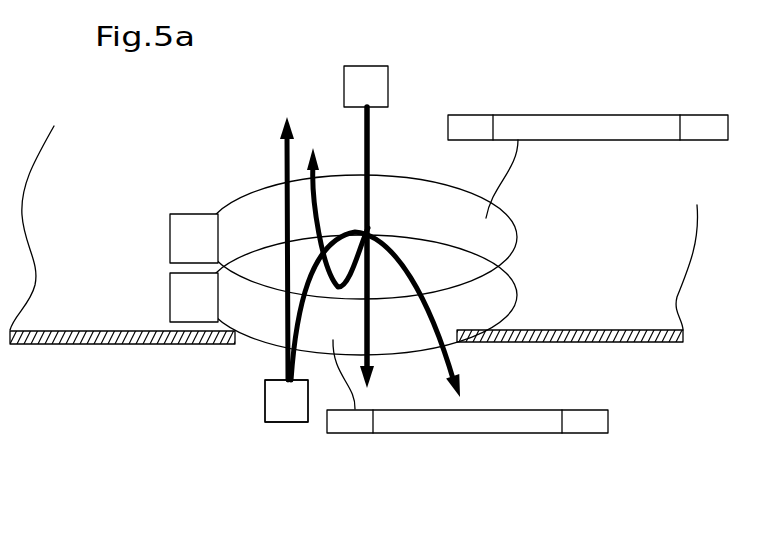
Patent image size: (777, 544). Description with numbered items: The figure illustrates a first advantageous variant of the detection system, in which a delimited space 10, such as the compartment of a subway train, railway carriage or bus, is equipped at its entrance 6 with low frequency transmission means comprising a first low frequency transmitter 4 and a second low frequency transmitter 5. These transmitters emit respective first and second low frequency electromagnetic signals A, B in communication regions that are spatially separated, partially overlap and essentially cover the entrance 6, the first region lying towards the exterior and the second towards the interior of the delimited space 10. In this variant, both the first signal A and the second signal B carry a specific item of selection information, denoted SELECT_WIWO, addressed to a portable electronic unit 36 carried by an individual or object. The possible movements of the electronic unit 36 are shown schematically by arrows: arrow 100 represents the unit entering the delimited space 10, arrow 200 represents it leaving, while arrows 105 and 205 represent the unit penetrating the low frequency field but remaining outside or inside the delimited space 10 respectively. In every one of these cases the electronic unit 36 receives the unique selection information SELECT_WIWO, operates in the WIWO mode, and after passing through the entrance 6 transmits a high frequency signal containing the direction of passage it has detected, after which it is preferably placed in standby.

The first low frequency transmitter 4 is at (170, 298).
The second low frequency transmitter 5 is at (170, 238).
The entrance 6 is at (306, 434).
The delimited space 10 is at (608, 228).
The portable electronic unit 36 is at (370, 66).
The arrow 100 is at (282, 150).
The arrow 105 is at (440, 326).
The arrow 200 is at (370, 340).
The arrow 205 is at (316, 183).
The first low frequency electromagnetic signal A is at (567, 433).
The second low frequency electromagnetic signal B is at (713, 115).